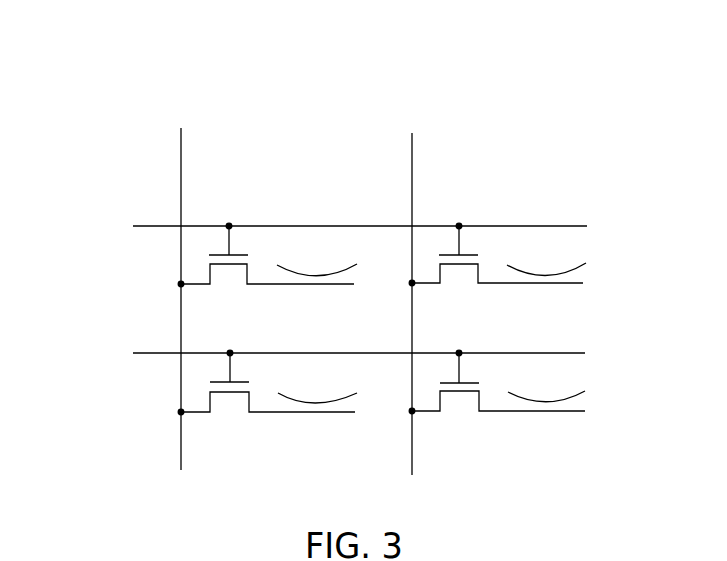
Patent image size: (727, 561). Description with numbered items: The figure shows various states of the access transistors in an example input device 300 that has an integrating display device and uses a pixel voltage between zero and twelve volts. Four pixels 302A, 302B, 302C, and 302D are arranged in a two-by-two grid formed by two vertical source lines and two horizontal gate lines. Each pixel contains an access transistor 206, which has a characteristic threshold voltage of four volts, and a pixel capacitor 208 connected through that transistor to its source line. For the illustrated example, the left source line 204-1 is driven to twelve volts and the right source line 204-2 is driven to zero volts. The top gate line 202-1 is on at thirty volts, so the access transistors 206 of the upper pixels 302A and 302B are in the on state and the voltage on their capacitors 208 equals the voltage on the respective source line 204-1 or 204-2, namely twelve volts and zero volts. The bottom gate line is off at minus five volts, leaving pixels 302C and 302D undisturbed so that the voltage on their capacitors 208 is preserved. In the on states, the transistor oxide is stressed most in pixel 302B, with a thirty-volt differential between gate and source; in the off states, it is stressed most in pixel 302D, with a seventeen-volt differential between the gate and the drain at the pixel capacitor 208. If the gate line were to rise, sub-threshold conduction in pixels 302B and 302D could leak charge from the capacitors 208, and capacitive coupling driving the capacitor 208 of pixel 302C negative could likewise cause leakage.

The input device 300 is at (135, 123).
The left source line 204-1 is at (181, 142).
The right source line 204-2 is at (412, 147).
The top gate line 202-1 is at (143, 226).
The pixel 302A is at (243, 188).
The pixel 302B is at (475, 192).
The pixel 302C is at (242, 435).
The pixel 302D is at (464, 426).
The access transistor 206 is at (222, 280).
The pixel capacitor 208 is at (300, 290).